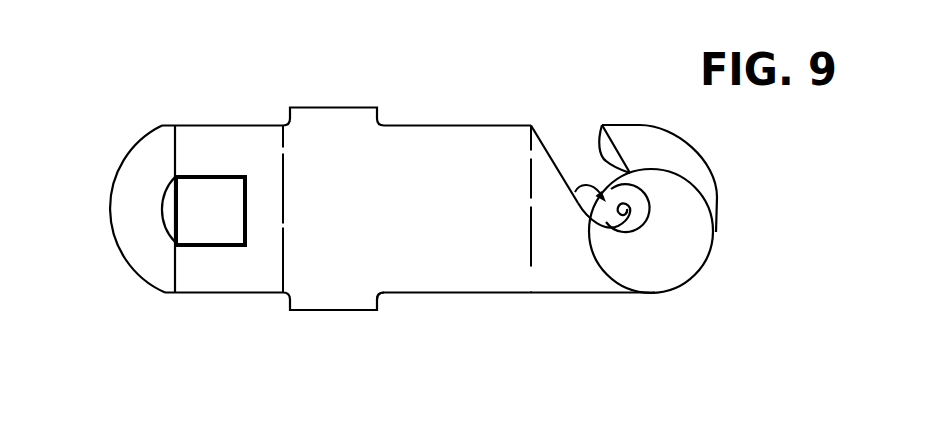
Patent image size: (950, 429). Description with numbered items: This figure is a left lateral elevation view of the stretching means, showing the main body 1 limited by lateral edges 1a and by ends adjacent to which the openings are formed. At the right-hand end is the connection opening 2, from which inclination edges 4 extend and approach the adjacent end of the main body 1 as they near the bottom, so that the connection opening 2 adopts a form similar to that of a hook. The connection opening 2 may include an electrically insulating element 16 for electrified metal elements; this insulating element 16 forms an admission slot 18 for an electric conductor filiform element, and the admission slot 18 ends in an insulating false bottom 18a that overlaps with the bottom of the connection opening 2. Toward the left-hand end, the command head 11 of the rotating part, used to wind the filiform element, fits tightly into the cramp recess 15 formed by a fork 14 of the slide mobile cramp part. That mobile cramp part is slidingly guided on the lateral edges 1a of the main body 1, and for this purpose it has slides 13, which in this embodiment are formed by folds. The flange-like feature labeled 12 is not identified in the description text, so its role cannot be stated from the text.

The main body 1 is at (519, 189).
The lateral edges 1a is at (417, 124).
The connection opening 2 is at (581, 144).
The inclination edges 4 is at (603, 125).
The command head 11 is at (195, 207).
The flange 12 is at (332, 90).
The slides 13 is at (377, 298).
The fork 14 is at (213, 149).
The cramp recess 15 is at (245, 207).
The electrically insulating element 16 is at (717, 291).
The admission slot 18 is at (578, 203).
The insulating false bottom 18a is at (632, 198).